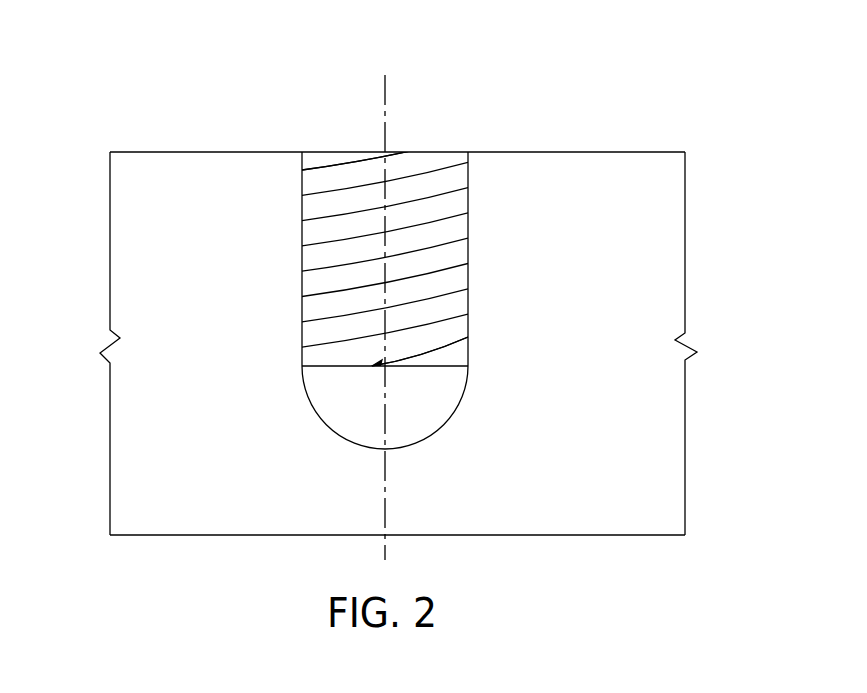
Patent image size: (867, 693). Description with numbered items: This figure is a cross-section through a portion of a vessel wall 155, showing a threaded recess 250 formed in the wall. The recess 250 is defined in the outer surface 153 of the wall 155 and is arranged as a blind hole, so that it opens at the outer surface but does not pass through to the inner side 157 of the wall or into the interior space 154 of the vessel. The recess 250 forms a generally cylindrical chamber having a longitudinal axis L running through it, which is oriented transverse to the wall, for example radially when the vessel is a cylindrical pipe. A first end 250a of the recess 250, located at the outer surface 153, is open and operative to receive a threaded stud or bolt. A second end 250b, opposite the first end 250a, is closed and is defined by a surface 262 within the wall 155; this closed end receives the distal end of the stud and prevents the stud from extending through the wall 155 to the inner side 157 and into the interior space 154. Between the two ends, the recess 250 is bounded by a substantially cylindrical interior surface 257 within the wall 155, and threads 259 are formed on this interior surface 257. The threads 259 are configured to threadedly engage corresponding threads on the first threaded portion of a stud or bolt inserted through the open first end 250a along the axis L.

The threaded recess 250 is at (491, 300).
The first end of recess 250a is at (423, 167).
The second end of recess 250b is at (455, 388).
The interior surface 257 is at (301, 296).
The threads 259 is at (452, 300).
The surface 262 is at (442, 427).
The outer surface 153 is at (203, 151).
The interior space 154 is at (515, 574).
The wall 155 is at (234, 440).
The inner side 157 is at (226, 537).
The longitudinal axis L is at (388, 92).